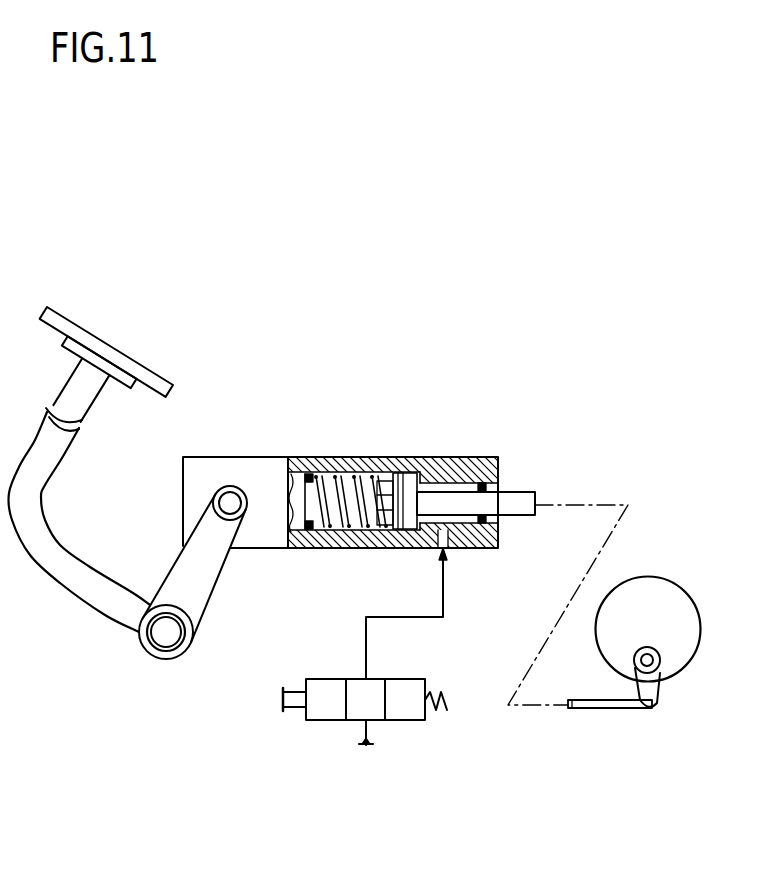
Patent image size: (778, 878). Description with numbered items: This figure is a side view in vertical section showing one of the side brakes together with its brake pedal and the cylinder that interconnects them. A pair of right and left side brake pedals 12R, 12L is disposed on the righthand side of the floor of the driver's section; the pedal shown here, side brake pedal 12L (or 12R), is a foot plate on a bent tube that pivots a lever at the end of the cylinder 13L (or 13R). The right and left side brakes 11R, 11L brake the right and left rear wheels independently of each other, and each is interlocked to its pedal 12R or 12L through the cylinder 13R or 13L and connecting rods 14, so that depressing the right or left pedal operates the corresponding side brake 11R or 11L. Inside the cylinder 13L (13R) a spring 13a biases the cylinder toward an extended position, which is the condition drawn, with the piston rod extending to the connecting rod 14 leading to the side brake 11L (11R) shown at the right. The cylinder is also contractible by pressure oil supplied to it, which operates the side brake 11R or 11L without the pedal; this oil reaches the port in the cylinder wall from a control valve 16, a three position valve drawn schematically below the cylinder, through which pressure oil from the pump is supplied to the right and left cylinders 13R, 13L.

The left side brake 11L is at (661, 588).
The right side brake 11R is at (653, 586).
The left side brake pedal 12L is at (157, 374).
The right side brake pedal 12R is at (156, 483).
The left cylinder 13L is at (384, 505).
The right cylinder 13R is at (384, 505).
The spring 13a is at (352, 530).
The connecting rod 14 is at (522, 492).
The control valve 16 is at (412, 679).